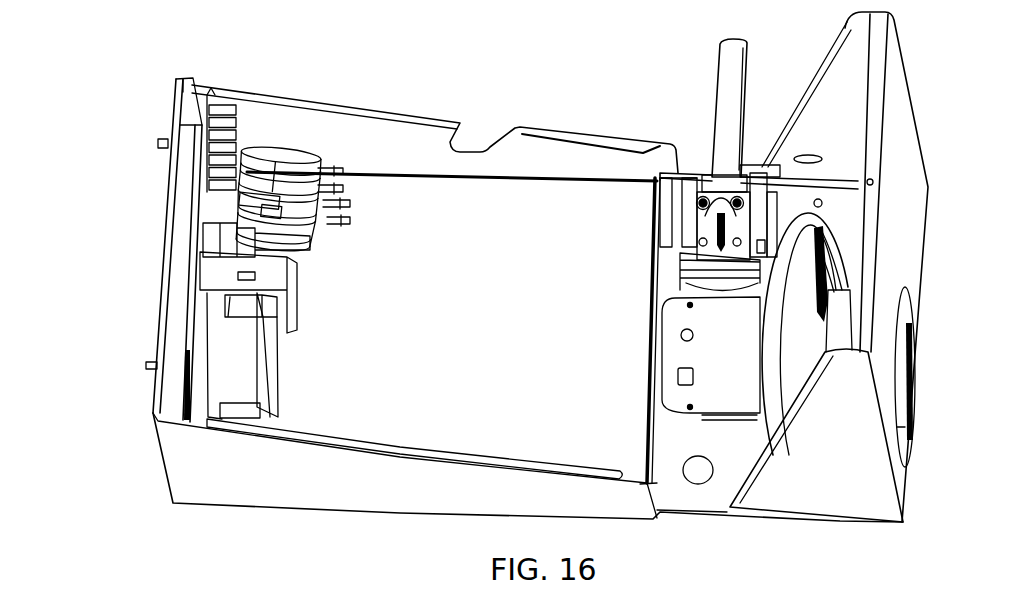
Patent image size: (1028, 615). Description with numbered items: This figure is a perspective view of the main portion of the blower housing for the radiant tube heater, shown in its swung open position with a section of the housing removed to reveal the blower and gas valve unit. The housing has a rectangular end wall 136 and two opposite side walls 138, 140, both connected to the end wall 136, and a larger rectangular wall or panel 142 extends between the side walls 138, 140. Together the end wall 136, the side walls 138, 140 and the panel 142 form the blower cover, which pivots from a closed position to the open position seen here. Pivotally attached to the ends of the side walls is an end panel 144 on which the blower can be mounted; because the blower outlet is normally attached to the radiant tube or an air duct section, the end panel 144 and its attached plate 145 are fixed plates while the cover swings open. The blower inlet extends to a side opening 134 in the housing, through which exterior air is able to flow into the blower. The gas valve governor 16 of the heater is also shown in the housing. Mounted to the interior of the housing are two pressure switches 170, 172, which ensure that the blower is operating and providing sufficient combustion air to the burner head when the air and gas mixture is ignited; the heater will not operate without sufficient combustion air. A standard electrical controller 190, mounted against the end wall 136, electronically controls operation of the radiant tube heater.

The gas valve governor 16 is at (675, 228).
The side opening 134 is at (905, 323).
The end wall 136 is at (173, 188).
The side wall 138 is at (403, 133).
The side wall 140 is at (355, 472).
The rectangular wall or panel 142 is at (497, 295).
The end panel 144 is at (812, 480).
The attached plate 145 is at (897, 127).
The pressure switch 170 is at (297, 157).
The pressure switch 172 is at (307, 250).
The electrical controller 190 is at (196, 353).